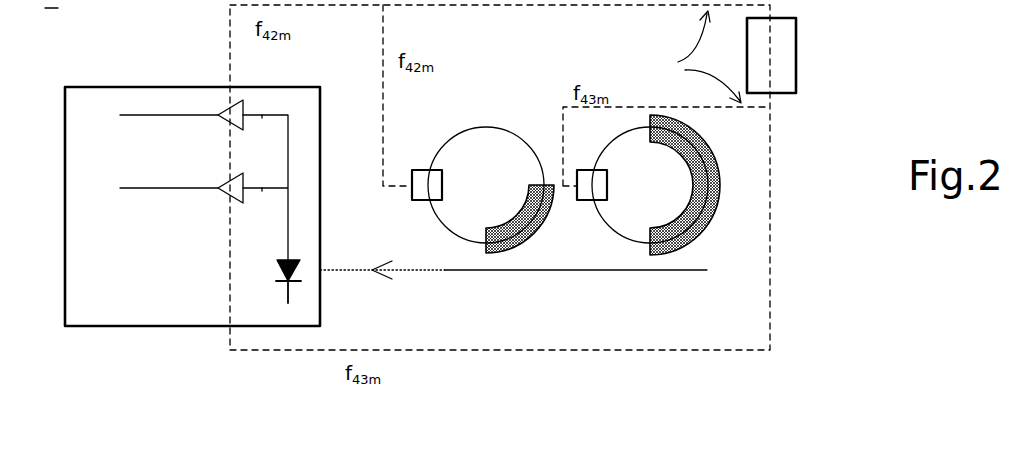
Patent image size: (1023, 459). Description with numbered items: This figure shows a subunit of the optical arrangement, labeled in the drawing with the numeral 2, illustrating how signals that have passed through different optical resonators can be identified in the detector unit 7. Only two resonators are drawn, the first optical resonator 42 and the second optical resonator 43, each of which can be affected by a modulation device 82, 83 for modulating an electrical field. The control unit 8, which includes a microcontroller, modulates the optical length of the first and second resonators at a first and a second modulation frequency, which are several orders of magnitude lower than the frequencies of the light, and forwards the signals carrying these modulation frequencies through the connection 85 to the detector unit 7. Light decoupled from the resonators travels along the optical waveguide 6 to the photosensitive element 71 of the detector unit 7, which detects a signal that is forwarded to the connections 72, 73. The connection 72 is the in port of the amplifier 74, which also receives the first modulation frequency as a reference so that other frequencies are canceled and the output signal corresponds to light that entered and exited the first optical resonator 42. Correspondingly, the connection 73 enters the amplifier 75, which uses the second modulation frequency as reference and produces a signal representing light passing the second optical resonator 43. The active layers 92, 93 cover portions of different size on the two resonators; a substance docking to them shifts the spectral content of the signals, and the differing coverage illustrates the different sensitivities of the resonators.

The optical measuring device 2 is at (45, 8).
The optical waveguide 6 is at (513, 281).
The detector unit 7 is at (160, 352).
The control unit 8 is at (797, 50).
The first optical resonator 42 is at (500, 197).
The second optical resonator 43 is at (664, 197).
The photosensitive element 71 is at (270, 280).
The connection 72 is at (262, 118).
The connection 73 is at (262, 191).
The amplifier 74 is at (222, 122).
The amplifier 75 is at (225, 193).
The modulation device 82 is at (420, 162).
The modulation device 83 is at (590, 162).
The connection 85 is at (696, 57).
The active layer 92 is at (520, 225).
The active layer 93 is at (688, 185).